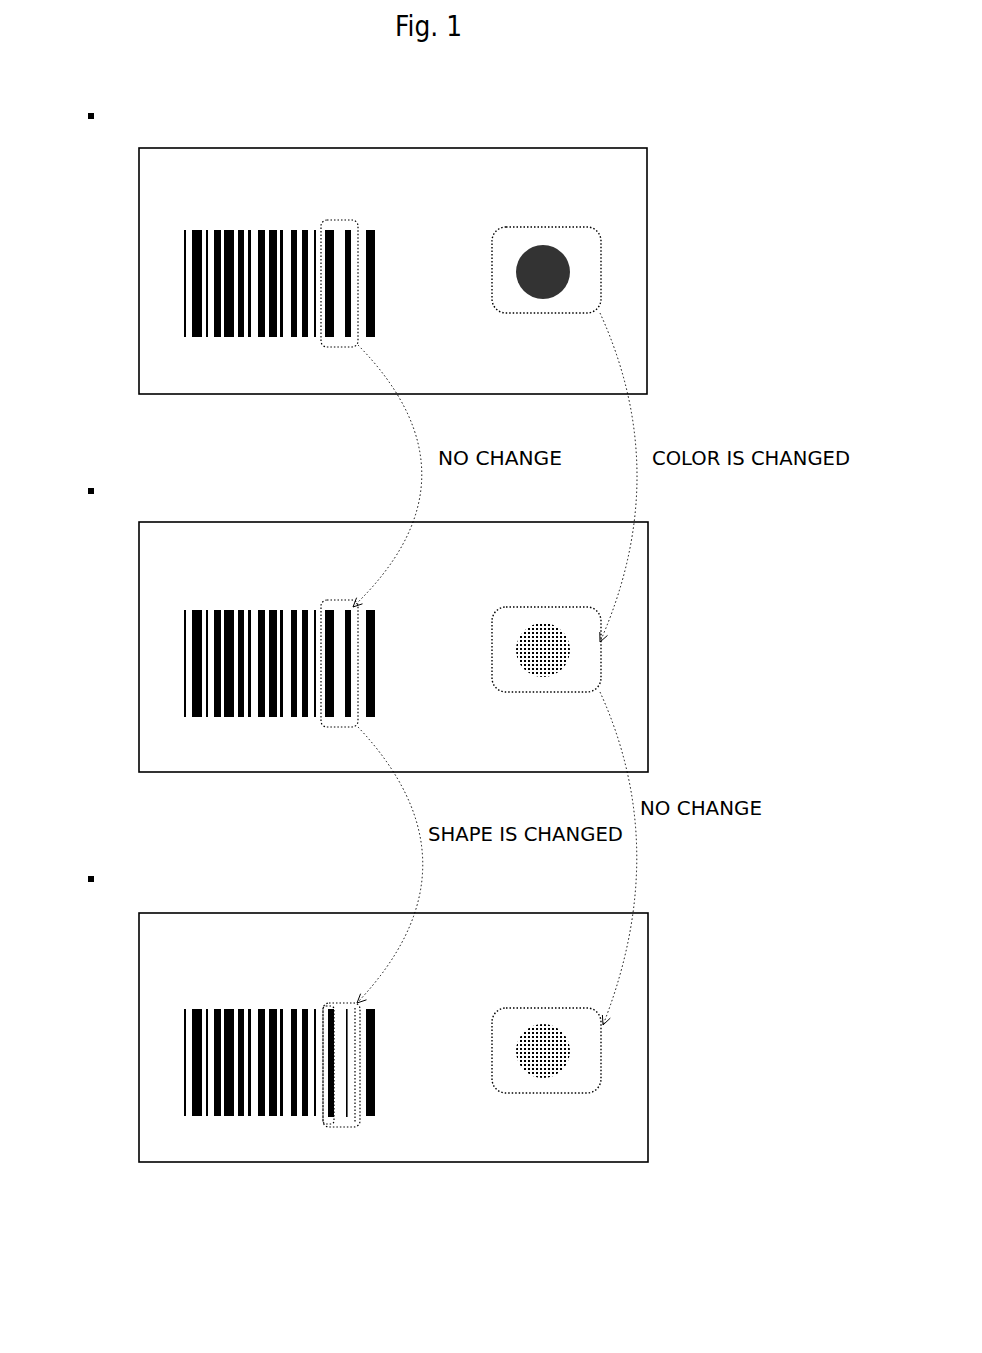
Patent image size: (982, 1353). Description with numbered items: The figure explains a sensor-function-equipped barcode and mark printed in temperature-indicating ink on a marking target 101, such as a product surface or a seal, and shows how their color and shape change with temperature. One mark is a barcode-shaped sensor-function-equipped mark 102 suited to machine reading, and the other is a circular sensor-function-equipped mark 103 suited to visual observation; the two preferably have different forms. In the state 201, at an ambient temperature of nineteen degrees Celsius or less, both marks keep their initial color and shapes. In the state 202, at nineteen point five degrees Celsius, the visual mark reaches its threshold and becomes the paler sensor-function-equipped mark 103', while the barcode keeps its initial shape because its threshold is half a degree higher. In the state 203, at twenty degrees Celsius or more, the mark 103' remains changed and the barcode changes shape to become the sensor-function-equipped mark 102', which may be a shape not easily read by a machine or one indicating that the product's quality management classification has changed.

The marking target 101 is at (451, 655).
The sensor-function-equipped mark suitable for machine reading 102 is at (279, 518).
The sensor-function-equipped mark after shape change 102' is at (279, 1109).
The sensor-function-equipped mark suitable for reading by visual observation 103 is at (610, 236).
The sensor-function-equipped mark after color change 103' is at (613, 814).
The state at ambient temperature of 19° C. or less 201 is at (401, 191).
The state at ambient temperature of 19.5° C. 202 is at (351, 574).
The state at ambient temperature of 20° C. or more 203 is at (410, 956).